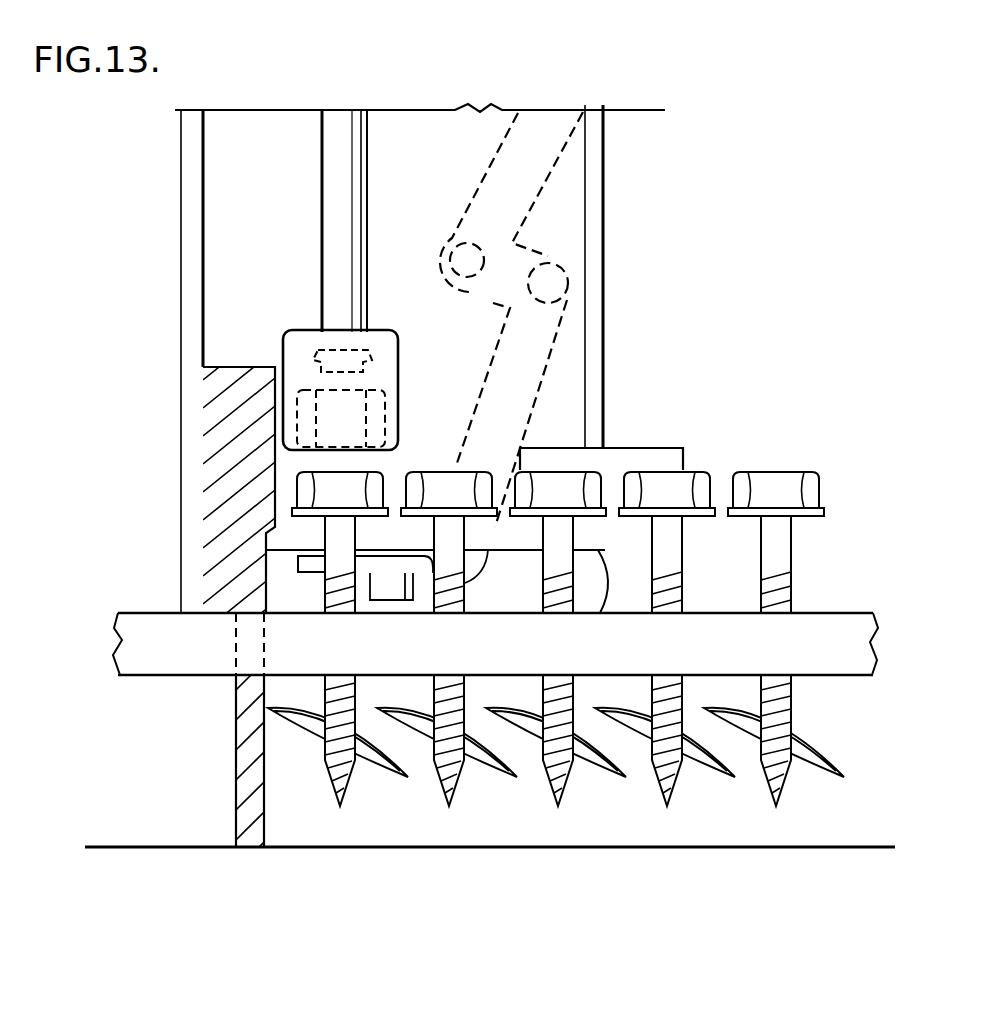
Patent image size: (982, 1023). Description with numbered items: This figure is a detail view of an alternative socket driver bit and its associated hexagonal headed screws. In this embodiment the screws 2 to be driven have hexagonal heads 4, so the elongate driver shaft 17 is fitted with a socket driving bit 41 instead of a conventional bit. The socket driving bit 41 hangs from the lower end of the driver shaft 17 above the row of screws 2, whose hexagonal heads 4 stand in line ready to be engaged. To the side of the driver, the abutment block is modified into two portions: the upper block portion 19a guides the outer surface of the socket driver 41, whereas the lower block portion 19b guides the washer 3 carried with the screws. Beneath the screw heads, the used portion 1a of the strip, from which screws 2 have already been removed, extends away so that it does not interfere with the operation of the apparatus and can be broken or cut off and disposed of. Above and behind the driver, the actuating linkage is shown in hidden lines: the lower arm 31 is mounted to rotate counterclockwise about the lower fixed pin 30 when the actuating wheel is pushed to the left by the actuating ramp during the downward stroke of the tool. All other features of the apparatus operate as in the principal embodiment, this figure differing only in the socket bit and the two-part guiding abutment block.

The elongate driver shaft 17 is at (322, 236).
The socket driving bit 41 is at (395, 330).
The lower fixed pin 30 is at (550, 268).
The lower arm 31 is at (563, 325).
The upper block portion 19a is at (203, 462).
The used portion of the strip 1a is at (136, 613).
The hexagonal head 4 is at (812, 471).
The screw 2 is at (792, 556).
The lower block portion 19b is at (236, 778).
The washer 3 is at (407, 777).